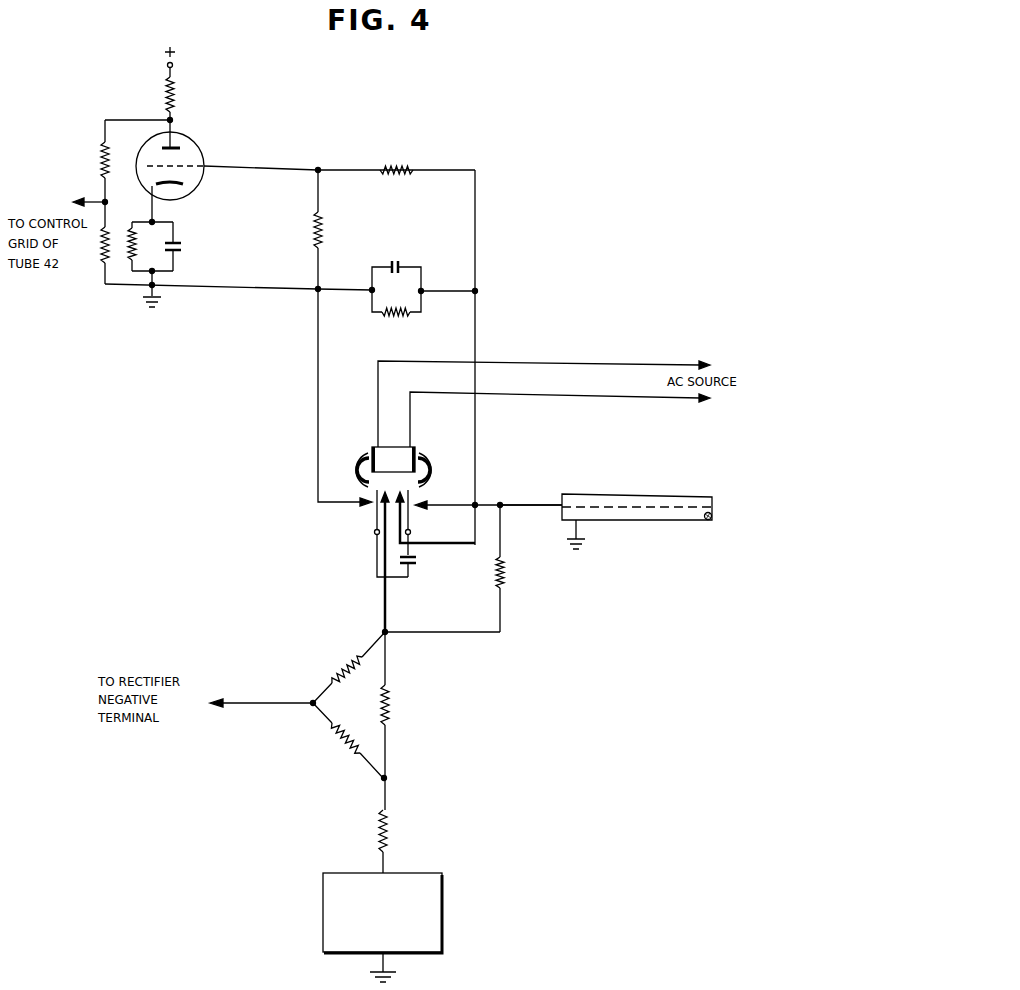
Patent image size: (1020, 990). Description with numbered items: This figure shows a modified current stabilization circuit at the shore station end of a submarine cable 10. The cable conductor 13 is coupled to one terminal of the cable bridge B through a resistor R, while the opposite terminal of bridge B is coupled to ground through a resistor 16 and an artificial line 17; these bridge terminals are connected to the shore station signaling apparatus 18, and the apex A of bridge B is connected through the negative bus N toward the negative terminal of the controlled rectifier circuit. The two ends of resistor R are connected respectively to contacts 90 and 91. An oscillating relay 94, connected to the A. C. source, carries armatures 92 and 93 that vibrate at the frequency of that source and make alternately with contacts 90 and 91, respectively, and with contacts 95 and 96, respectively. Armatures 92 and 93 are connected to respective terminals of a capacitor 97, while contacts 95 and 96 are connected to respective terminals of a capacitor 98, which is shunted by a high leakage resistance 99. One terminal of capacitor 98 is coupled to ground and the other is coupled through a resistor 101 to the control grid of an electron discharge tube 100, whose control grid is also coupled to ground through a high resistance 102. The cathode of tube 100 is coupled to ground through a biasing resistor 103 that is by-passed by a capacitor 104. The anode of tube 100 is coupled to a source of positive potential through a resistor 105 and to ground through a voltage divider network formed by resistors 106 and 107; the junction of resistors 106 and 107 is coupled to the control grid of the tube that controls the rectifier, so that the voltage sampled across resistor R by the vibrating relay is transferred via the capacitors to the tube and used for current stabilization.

The resistor 105 is at (178, 98).
The resistor 106 is at (103, 160).
The resistor 107 is at (105, 232).
The electron discharge tube 100 is at (195, 160).
The capacitor 104 is at (183, 247).
The biasing resistor 103 is at (130, 262).
The resistor 101 is at (393, 167).
The high resistance 102 is at (315, 223).
The capacitor 98 is at (395, 258).
The high leakage resistance 99 is at (402, 318).
The oscillating relay 94 is at (405, 452).
The contact 95 is at (368, 499).
The contact 91 is at (417, 503).
The armature 92 is at (375, 508).
The armature 93 is at (413, 510).
The contact 90 is at (380, 508).
The contact 96 is at (400, 517).
The capacitor 97 is at (415, 562).
The submarine cable 10 is at (653, 495).
The cable conductor 13 is at (548, 510).
The resistor R is at (505, 572).
The shore station signaling apparatus 18 is at (392, 700).
The resistor 16 is at (390, 823).
The artificial line 17 is at (435, 877).
The apex A is at (312, 707).
The cable bridge B is at (361, 713).
The negative bus N is at (265, 705).